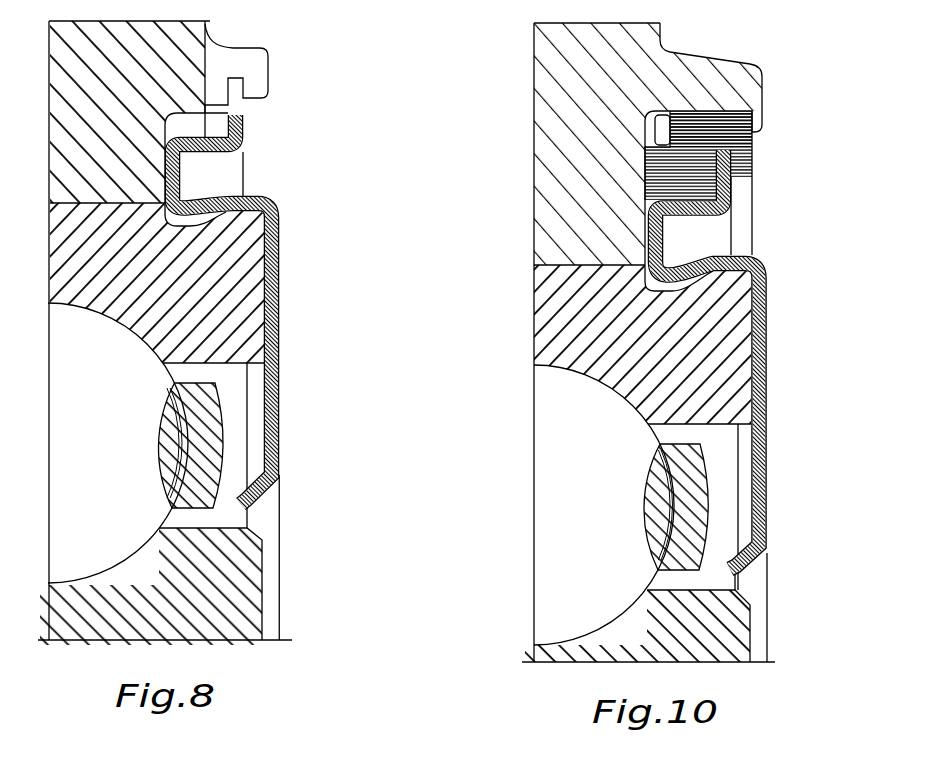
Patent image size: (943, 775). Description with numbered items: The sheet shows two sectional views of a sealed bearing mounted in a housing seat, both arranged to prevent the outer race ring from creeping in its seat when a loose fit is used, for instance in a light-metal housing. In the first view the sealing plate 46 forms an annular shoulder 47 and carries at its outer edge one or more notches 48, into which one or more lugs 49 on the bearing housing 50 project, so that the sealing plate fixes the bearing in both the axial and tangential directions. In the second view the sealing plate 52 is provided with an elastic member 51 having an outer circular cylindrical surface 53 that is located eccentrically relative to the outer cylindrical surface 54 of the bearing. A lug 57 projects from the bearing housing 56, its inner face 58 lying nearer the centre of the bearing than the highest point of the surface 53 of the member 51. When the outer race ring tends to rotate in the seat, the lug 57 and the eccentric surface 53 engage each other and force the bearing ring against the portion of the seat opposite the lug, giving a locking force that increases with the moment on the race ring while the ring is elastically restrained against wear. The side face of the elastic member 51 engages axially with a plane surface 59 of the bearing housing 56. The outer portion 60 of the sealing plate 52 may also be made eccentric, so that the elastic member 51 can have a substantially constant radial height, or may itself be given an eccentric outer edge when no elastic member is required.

In FIG. 8, the sealing plate 46 is at (279, 358).
In FIG. 8, the annular shoulder 47 is at (241, 170).
In FIG. 8, the notch 48 is at (240, 108).
In FIG. 8, the lug 49 is at (252, 77).
In FIG. 8, the bearing housing 50 is at (170, 37).
In FIG. 10, the elastic member 51 is at (748, 158).
In FIG. 10, the sealing plate 52 is at (767, 310).
In FIG. 10, the outer circular cylindrical surface 53 is at (758, 122).
In FIG. 10, the outer cylindrical surface of the bearing 54 is at (543, 255).
In FIG. 10, the bearing housing 56 is at (557, 90).
In FIG. 10, the lug 57 is at (741, 82).
In FIG. 10, the inner face of the lug 58 is at (748, 115).
In FIG. 10, the plane surface of the bearing housing 59 is at (643, 175).
In FIG. 10, the outer portion of the sealing plate 60 is at (727, 180).